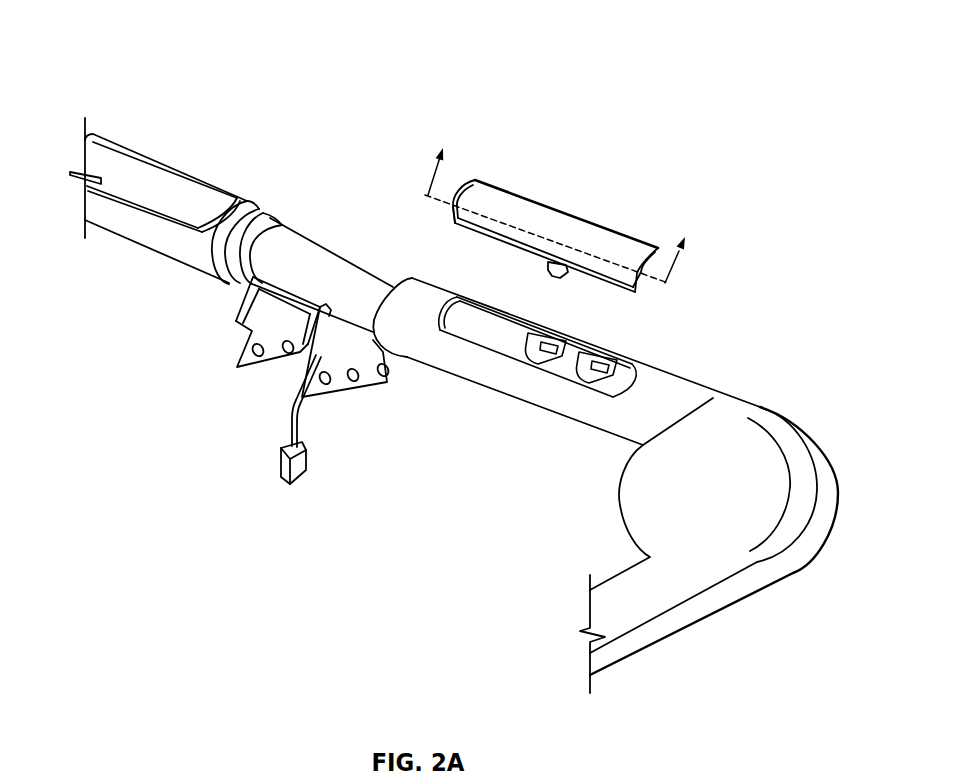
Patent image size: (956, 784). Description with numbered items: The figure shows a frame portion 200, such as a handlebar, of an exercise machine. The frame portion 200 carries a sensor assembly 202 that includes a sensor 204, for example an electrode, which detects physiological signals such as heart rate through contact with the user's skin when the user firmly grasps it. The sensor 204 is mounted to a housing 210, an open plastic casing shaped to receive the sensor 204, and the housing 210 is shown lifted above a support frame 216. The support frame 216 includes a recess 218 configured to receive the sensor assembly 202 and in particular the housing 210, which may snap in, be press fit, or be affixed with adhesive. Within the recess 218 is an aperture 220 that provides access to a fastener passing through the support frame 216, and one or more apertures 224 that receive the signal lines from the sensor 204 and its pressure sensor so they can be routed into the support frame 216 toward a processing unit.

The frame portion 200 is at (110, 56).
The sensor assembly 202 is at (542, 204).
The sensor 204 is at (567, 223).
The housing 210 is at (452, 210).
The support frame 216 is at (757, 560).
The recess 218 is at (465, 310).
The aperture 220 is at (545, 345).
The apertures 224 is at (600, 370).